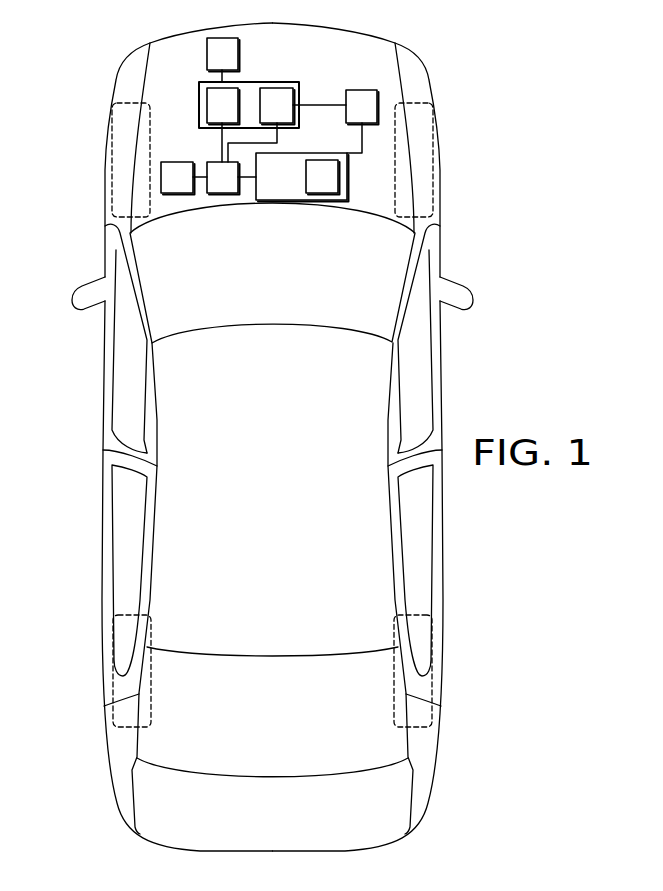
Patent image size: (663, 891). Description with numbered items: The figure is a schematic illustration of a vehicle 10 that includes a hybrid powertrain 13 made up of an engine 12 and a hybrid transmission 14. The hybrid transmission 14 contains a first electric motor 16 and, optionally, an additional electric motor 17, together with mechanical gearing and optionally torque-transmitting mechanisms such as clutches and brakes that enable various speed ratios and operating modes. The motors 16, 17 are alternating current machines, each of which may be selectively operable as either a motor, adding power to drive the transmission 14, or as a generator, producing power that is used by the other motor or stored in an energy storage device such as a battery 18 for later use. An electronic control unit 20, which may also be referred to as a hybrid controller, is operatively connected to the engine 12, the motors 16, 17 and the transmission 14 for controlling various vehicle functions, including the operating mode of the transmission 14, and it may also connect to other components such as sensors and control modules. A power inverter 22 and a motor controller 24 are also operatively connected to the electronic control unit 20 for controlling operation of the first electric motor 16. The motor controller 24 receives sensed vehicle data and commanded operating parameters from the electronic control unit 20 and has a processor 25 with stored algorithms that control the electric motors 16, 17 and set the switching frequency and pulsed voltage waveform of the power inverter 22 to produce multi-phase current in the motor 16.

The vehicle 10 is at (86, 638).
The engine 12 is at (213, 67).
The hybrid powertrain 13 is at (191, 85).
The hybrid transmission 14 is at (282, 82).
The first electric motor 16 is at (213, 118).
The additional electric motor 17 is at (267, 118).
The battery 18 is at (168, 190).
The electronic control unit 20 is at (352, 118).
The power inverter 22 is at (213, 190).
The motor controller 24 is at (270, 190).
The processor 25 is at (313, 190).